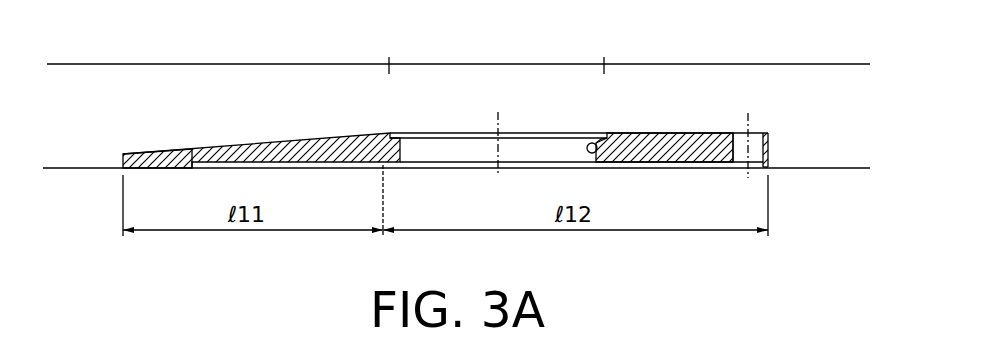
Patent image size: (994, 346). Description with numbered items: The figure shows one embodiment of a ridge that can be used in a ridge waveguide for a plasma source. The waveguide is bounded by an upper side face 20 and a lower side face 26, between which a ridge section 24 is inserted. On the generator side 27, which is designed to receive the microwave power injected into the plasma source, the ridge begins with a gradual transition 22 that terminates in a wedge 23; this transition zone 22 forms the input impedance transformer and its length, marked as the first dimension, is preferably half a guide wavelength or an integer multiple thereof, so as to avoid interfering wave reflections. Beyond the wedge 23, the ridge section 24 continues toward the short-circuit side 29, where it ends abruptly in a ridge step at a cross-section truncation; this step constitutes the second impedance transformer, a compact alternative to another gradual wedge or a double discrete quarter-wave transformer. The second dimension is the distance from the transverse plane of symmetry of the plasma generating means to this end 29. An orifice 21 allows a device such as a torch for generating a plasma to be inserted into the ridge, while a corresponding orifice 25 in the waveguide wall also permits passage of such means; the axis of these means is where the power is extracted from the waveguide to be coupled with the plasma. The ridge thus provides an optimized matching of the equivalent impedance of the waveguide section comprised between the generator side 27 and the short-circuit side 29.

The upper side face 20 is at (658, 69).
The orifice 21 is at (613, 142).
The gradual transition 22 is at (195, 148).
The tapered blade body 23 is at (276, 126).
The ridge section 24 is at (686, 133).
The orifice in the waveguide wall 25 is at (532, 62).
The lower side face 26 is at (93, 170).
The generator side 27 is at (108, 98).
The short-circuit side 29 is at (775, 108).